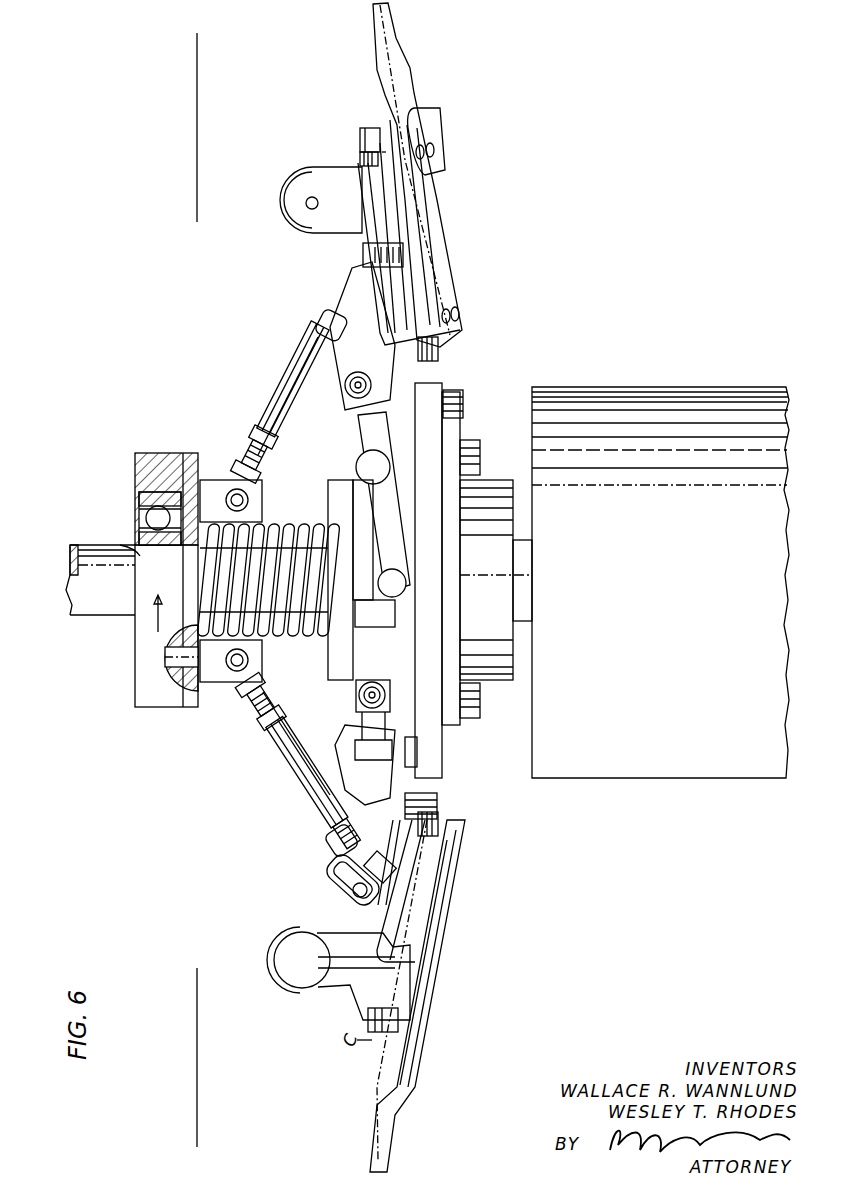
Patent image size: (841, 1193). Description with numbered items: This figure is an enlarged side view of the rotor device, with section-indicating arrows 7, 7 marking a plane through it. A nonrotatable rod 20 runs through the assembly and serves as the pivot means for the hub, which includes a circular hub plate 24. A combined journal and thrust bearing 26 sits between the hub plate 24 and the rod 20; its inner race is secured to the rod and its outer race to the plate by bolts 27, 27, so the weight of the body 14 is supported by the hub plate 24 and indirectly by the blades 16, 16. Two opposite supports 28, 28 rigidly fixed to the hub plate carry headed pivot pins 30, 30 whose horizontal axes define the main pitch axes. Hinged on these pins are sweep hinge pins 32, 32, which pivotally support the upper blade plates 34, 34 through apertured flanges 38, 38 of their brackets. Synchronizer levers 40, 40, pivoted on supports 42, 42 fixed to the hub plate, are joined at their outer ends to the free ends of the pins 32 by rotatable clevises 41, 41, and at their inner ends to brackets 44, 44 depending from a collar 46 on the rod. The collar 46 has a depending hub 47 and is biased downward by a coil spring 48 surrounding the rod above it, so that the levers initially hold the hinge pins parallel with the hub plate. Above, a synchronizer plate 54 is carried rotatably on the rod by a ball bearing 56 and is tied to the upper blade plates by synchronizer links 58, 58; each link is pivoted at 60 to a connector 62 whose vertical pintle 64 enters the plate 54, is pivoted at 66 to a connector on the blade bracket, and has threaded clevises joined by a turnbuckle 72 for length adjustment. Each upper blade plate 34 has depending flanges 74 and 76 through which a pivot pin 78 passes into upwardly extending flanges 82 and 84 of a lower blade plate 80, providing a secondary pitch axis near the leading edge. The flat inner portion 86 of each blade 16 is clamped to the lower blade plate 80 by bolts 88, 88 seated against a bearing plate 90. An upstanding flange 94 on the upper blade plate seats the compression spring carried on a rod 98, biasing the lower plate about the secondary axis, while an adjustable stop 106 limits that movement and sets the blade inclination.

The section line 7- 7 is at (196, 63).
The body 14 is at (650, 778).
The rotatable blades 16 is at (376, 30).
The rod 20 is at (86, 618).
The circular hub plate 24 is at (420, 765).
The combined journal and thrust bearing 26 is at (500, 478).
The bolts 27 is at (480, 455).
The supports 28 is at (452, 388).
The headed pivot pins 30 is at (358, 700).
The flapping or sweep hinge pins 32 is at (345, 387).
The upper blade plates 34 is at (362, 300).
The flanges 38 is at (320, 332).
The synchronizer levers 40 is at (418, 505).
The clevises 41 is at (362, 430).
The supports 42 is at (412, 690).
The brackets 44 is at (388, 605).
The collar 46 is at (328, 500).
The depending hub 47 is at (352, 610).
The coil spring 48 is at (290, 625).
The synchronizer plate 54 is at (135, 468).
The ball bearing 56 is at (139, 512).
The synchronizer links 58 is at (265, 404).
The pivotal connection 60 is at (237, 489).
The connector 62 is at (215, 480).
The vertical pintle 64 is at (170, 672).
The pivotal connection 66 is at (345, 883).
The turnbuckle 72 is at (290, 368).
The depending flange 74 is at (438, 352).
The depending flange 76 is at (360, 156).
The pivot pin 78 is at (398, 300).
The lower blade plate 80 is at (410, 267).
The upwardly extending flange 82 is at (385, 340).
The upwardly extending flange 84 is at (362, 128).
The inner portion of blade 86 is at (416, 95).
The bolts 88 is at (438, 158).
The bearing plate 90 is at (440, 222).
The upstanding flange 94 is at (297, 185).
The rod 98 is at (318, 205).
The adjustable stop 106 is at (378, 243).